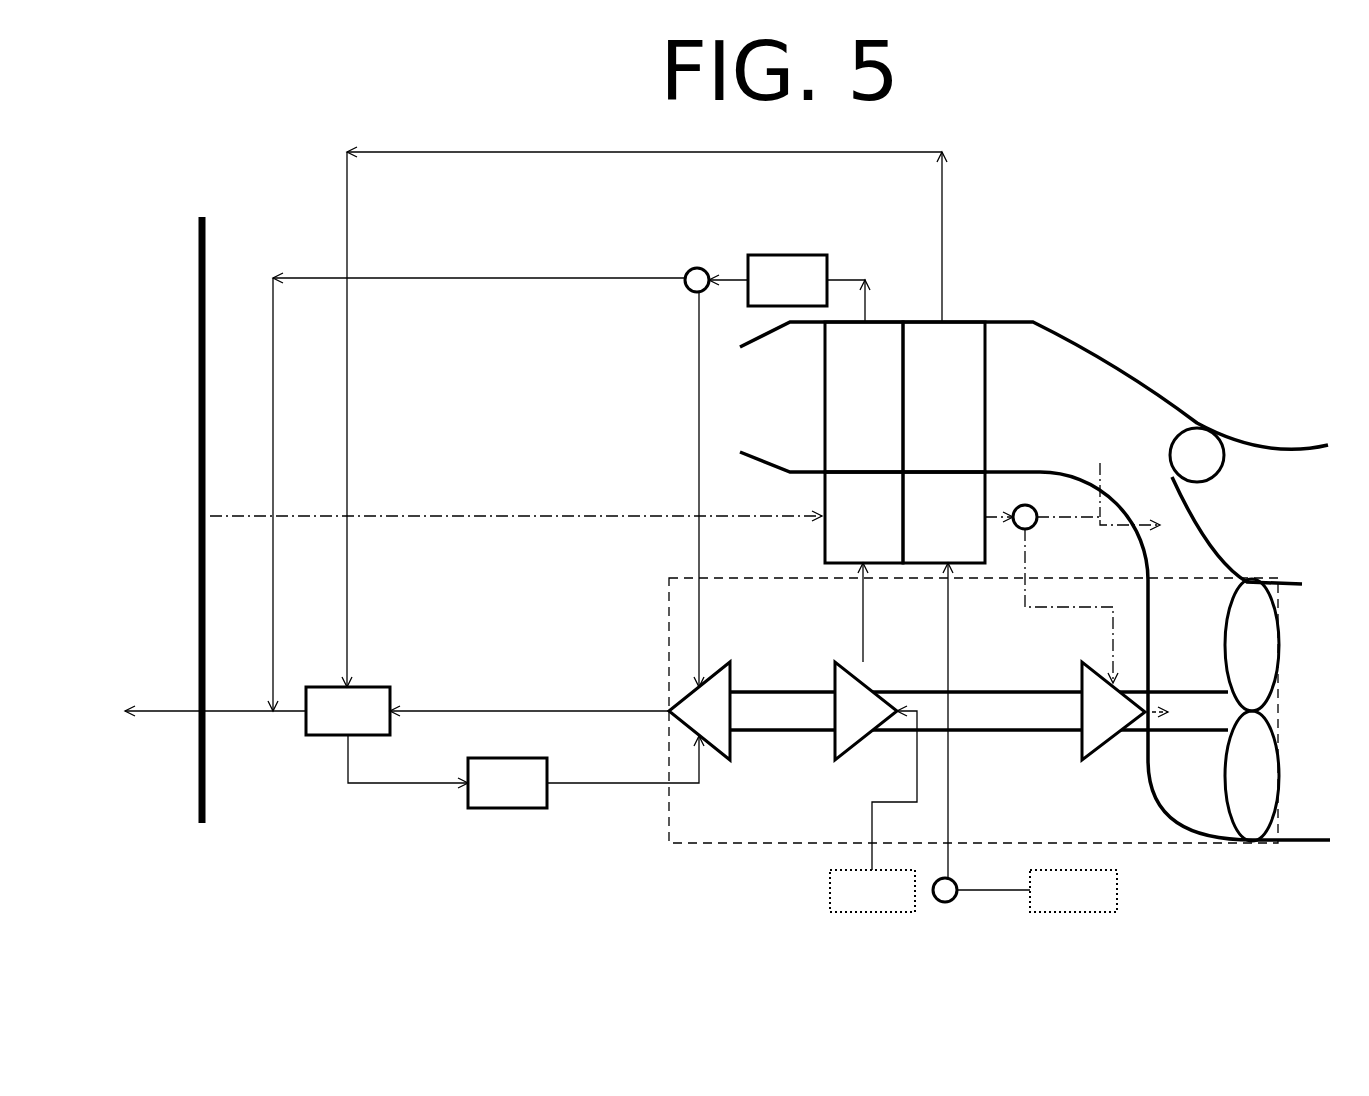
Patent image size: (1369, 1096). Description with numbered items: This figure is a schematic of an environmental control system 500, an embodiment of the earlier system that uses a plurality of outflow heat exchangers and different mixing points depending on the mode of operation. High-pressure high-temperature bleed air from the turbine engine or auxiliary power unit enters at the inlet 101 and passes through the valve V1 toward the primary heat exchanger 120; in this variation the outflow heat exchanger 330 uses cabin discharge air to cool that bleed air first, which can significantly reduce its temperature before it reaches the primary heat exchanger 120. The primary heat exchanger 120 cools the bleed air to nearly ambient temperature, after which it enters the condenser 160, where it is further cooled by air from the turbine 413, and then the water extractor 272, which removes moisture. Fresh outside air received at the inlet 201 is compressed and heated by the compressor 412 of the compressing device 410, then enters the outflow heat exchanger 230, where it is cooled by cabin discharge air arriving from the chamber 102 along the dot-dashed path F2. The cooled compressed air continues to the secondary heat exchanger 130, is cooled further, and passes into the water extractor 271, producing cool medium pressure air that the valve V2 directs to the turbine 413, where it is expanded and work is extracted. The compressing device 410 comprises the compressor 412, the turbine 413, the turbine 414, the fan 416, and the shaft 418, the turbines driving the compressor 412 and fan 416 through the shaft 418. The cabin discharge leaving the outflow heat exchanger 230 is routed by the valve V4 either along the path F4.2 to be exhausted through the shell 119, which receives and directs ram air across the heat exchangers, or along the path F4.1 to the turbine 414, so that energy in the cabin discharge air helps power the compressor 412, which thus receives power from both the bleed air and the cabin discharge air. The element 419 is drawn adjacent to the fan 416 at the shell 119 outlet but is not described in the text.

The environmental control system 500 is at (1266, 147).
The chamber 102 is at (198, 217).
The condenser 160 is at (327, 725).
The water extractor 272 is at (486, 797).
The water extractor 271 is at (766, 298).
The secondary heat exchanger 130 is at (843, 413).
The primary heat exchanger 120 is at (924, 413).
The outflow heat exchanger 230 is at (843, 535).
The outflow heat exchanger 330 is at (924, 535).
The shell 119 is at (1194, 418).
The fan blades 419 is at (1268, 589).
The fan 416 is at (1196, 778).
The shaft 418 is at (1048, 733).
The turbine 414 is at (1088, 725).
The compressor 412 is at (840, 723).
The turbine 413 is at (690, 725).
The compressing device 410 is at (785, 846).
The inlet 201 is at (872, 891).
The inlet 101 is at (1073, 891).
The valve V1 is at (953, 899).
The valve V2 is at (688, 271).
The valve V4 is at (1035, 504).
The path for a medium F2 is at (442, 515).
The path for a medium F4.1 is at (1033, 615).
The path for a medium F4.2 is at (1098, 484).